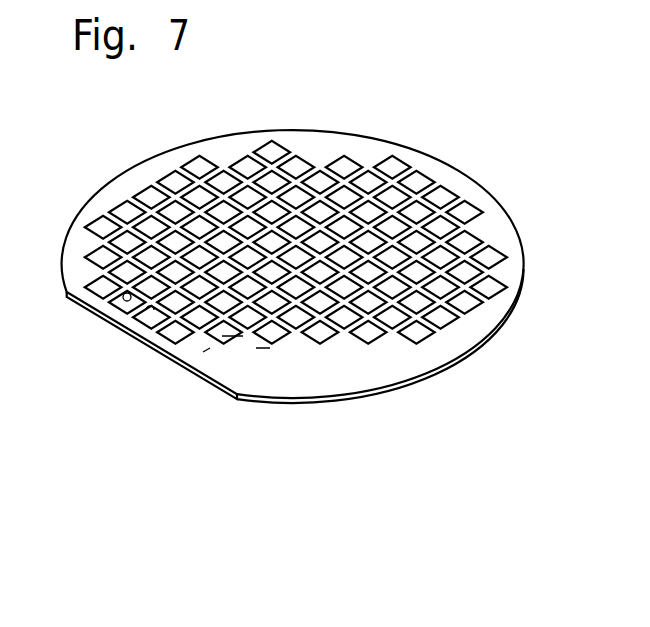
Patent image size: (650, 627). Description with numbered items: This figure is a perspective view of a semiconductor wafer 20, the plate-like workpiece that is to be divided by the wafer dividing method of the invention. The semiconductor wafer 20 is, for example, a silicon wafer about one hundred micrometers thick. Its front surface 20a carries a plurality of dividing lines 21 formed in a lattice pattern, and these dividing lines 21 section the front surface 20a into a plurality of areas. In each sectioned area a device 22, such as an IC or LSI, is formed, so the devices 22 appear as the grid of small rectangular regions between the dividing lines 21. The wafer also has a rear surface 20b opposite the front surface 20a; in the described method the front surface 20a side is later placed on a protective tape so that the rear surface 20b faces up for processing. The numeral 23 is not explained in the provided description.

The semiconductor wafer 20 is at (293, 253).
The front surface 20a is at (437, 170).
The rear surface 20b is at (330, 404).
The dividing lines 21 is at (449, 320).
The device 22 is at (148, 313).
The streets (dividing lines) 23 is at (242, 335).